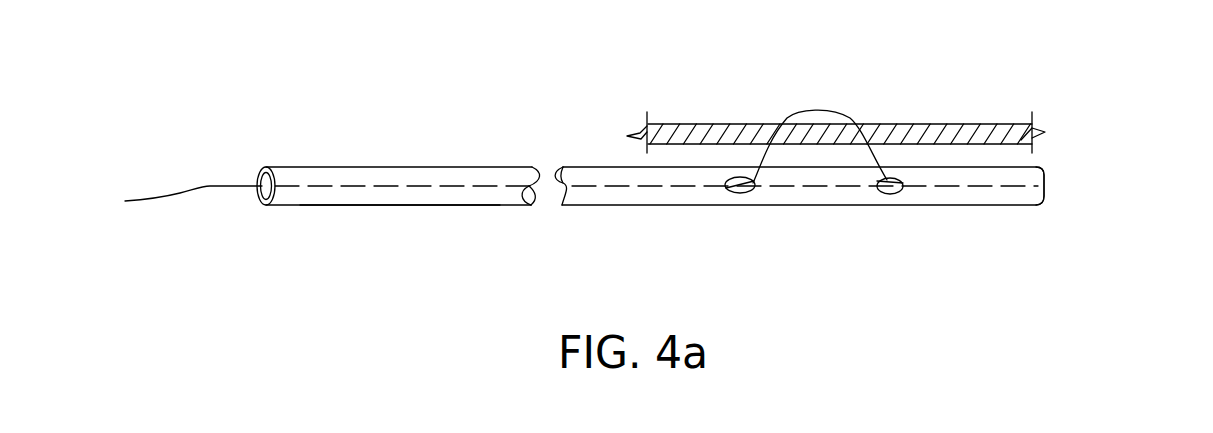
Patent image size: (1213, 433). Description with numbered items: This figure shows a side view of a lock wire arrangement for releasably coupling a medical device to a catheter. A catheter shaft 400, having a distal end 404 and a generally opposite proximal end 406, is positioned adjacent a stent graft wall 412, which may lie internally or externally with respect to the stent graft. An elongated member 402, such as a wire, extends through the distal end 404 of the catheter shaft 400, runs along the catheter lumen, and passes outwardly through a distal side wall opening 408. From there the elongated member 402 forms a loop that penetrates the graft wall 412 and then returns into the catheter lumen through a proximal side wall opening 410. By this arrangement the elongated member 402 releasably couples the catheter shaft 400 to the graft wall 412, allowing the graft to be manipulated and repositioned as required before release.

The catheter shaft 400 is at (333, 168).
The elongated member 402 is at (202, 188).
The distal end 404 is at (347, 205).
The proximal end 406 is at (1044, 174).
The distal side wall opening 408 is at (741, 193).
The proximal side wall opening 410 is at (892, 194).
The stent graft wall 412 is at (955, 124).